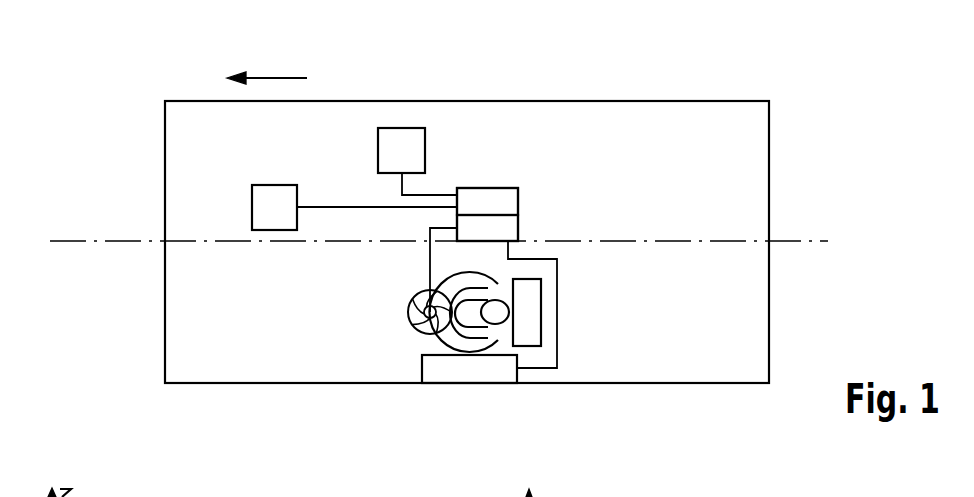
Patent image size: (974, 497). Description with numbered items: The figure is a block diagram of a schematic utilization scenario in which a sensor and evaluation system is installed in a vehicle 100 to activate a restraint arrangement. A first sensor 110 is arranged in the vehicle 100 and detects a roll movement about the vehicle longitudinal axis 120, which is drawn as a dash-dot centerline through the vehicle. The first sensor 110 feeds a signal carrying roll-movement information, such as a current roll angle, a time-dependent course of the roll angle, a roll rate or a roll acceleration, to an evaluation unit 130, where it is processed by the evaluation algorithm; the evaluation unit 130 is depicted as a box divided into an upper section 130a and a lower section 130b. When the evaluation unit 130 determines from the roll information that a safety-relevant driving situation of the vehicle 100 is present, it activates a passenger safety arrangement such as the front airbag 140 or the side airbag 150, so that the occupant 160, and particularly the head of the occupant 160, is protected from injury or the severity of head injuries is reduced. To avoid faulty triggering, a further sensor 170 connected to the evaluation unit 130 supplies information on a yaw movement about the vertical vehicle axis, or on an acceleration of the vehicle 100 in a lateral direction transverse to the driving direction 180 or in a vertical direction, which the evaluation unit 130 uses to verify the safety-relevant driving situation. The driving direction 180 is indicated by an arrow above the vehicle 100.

The vehicle 100 is at (490, 101).
The first sensor 110 is at (275, 185).
The vehicle longitudinal axis 120 is at (75, 240).
The evaluation unit 130 is at (487, 188).
The first control sub-unit 130a is at (519, 193).
The second control sub-unit 130b is at (519, 226).
The front airbag 140 is at (408, 313).
The side airbag 150 is at (446, 370).
The occupant 160 is at (487, 338).
The further sensor 170 is at (398, 128).
The driving direction 180 is at (276, 78).